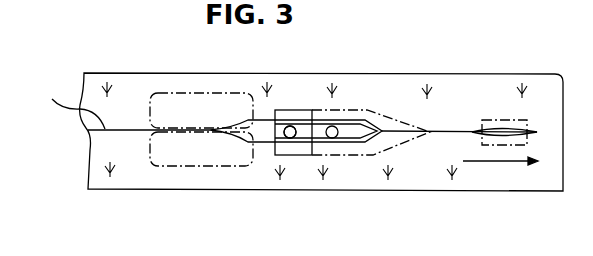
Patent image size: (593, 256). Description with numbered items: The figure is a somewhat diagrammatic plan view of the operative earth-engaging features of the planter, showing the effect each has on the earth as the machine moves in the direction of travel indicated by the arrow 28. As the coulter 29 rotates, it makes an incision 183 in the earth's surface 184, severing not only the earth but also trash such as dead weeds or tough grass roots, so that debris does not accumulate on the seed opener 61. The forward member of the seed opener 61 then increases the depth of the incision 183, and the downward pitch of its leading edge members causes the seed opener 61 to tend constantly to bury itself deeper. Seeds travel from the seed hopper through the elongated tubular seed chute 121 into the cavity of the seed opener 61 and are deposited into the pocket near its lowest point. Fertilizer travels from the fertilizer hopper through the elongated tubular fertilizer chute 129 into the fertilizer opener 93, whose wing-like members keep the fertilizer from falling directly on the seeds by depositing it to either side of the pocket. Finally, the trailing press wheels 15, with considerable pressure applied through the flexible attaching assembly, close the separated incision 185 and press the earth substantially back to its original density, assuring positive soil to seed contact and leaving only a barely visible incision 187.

The trailing press wheels 15 is at (150, 112).
The arrow 28 is at (500, 163).
The coulter 29 is at (520, 121).
The seed opener 61 is at (387, 122).
The fertilizer opener 93 is at (292, 110).
The seed chute 121 is at (334, 126).
The fertilizer chute 129 is at (293, 126).
The incision 183 is at (450, 132).
The earth's surface 184 is at (503, 88).
The separated incision 185 is at (268, 118).
The barely visible incision 187 is at (72, 105).